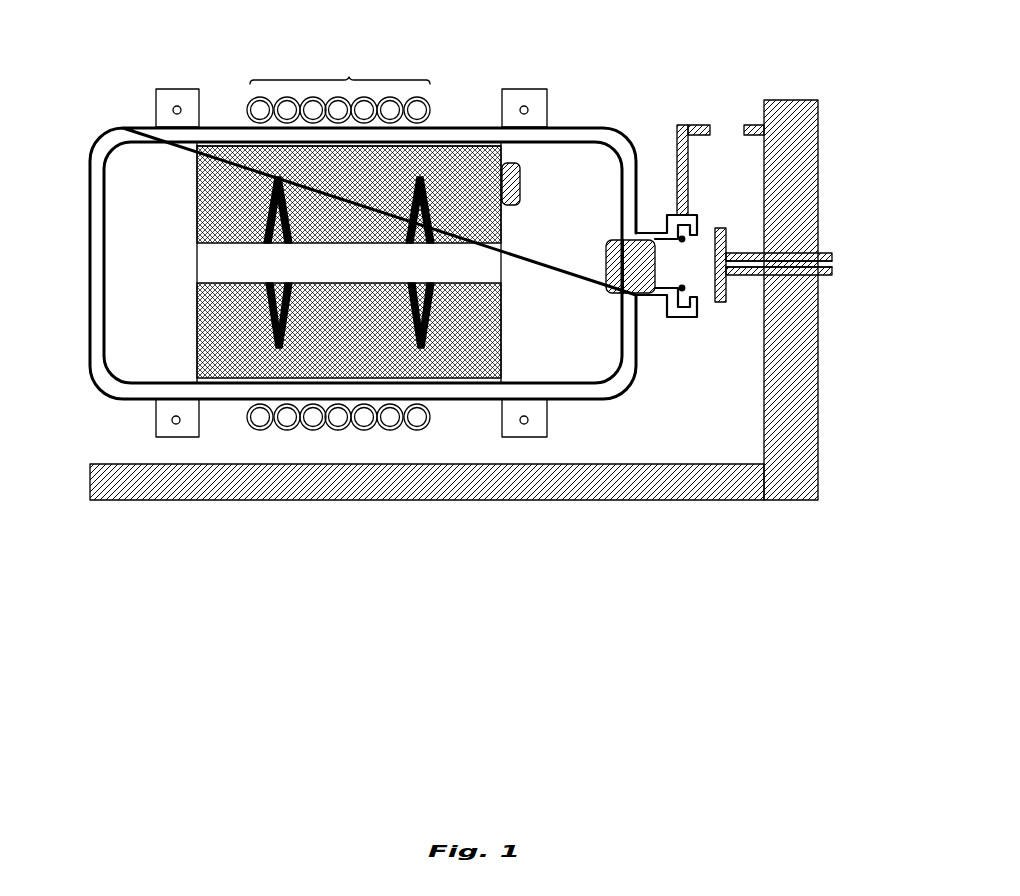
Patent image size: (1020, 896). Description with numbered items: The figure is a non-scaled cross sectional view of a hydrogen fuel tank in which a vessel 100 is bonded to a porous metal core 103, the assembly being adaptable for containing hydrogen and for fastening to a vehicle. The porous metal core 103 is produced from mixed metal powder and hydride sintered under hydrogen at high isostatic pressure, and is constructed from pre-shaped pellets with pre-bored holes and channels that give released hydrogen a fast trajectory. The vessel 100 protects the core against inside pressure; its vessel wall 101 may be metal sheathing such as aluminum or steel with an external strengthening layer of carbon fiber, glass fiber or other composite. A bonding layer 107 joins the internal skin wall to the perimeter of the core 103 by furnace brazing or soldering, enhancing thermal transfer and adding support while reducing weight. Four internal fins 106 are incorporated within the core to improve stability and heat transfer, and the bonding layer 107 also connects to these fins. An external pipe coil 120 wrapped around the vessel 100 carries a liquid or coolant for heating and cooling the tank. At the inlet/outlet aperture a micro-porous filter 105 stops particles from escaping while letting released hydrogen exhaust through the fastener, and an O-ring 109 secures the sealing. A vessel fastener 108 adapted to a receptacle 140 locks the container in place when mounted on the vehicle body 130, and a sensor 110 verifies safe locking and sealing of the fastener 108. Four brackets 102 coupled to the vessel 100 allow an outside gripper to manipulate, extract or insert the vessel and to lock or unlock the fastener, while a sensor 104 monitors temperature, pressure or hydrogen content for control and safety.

The vessel 100 is at (90, 243).
The vessel wall 101 is at (110, 142).
The brackets 102 is at (177, 87).
The porous metal core 103 is at (192, 198).
The sensor 104 is at (524, 186).
The micro-porous filter 105 is at (605, 270).
The internal fins 106 is at (483, 321).
The bonding layer 107 is at (462, 148).
The vessel fastener 108 is at (689, 319).
The O-ring 109 is at (697, 223).
The sensor 110 is at (745, 124).
The external pipe coil 120 is at (349, 78).
The vehicle body 130 is at (752, 502).
The receptacle 140 is at (836, 264).